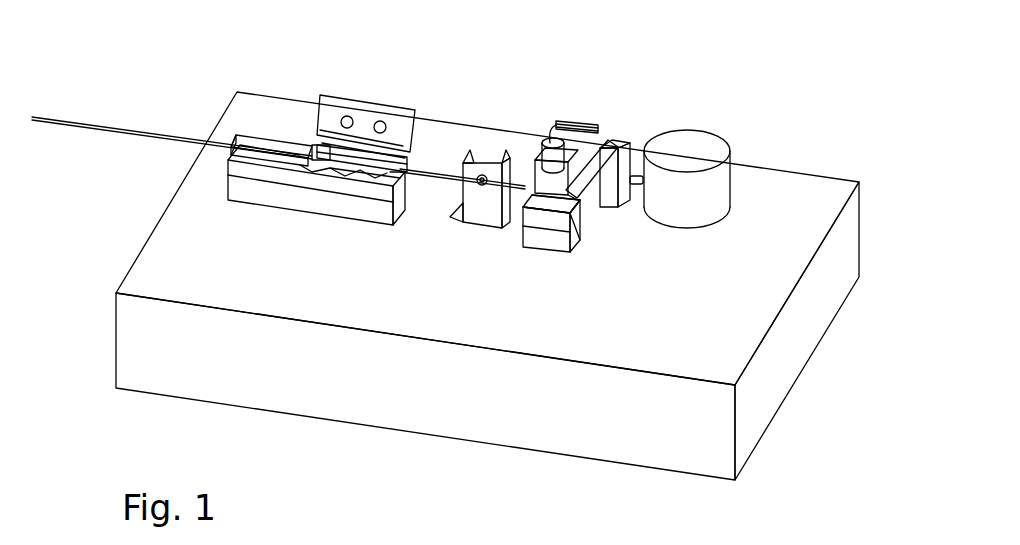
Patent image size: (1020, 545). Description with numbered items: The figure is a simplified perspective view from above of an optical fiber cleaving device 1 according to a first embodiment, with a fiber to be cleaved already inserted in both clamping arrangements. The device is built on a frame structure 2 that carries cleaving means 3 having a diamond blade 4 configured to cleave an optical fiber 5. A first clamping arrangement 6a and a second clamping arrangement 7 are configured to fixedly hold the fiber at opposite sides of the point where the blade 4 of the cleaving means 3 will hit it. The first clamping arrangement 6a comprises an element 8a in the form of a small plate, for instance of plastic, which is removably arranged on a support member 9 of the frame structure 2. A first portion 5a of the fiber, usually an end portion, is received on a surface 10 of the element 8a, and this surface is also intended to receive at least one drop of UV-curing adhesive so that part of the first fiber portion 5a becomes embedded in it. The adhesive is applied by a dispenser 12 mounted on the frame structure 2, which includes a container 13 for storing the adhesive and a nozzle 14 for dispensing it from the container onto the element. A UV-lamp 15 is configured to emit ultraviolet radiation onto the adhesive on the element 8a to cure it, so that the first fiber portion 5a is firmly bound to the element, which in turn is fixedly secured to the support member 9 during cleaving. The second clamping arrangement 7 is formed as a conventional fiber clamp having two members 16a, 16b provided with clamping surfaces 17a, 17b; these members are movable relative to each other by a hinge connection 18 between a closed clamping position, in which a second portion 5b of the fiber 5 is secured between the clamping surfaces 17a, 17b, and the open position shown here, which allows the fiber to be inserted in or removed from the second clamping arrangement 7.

The optical fiber cleaving device 1 is at (787, 132).
The frame structure 2 is at (643, 465).
The cleaving means 3 is at (508, 165).
The diamond blade 4 is at (480, 175).
The optical fiber 5 is at (60, 118).
The first portion of the fiber 5a is at (555, 198).
The second portion of the fiber 5b is at (351, 172).
The first clamping arrangement 6a is at (553, 258).
The second clamping arrangement 7 is at (330, 229).
The element 8a is at (580, 213).
The support member 9 is at (577, 235).
The surface 10 is at (563, 207).
The dispenser 12 is at (575, 190).
The container 13 is at (678, 128).
The nozzle 14 is at (575, 200).
The UV-lamp 15 is at (558, 122).
The member of the second clamping arrangement 16a is at (257, 172).
The member of the second clamping arrangement 16b is at (330, 97).
The clamping surface 17a is at (340, 177).
The clamping surface 17b is at (363, 120).
The hinge connection 18 is at (317, 148).